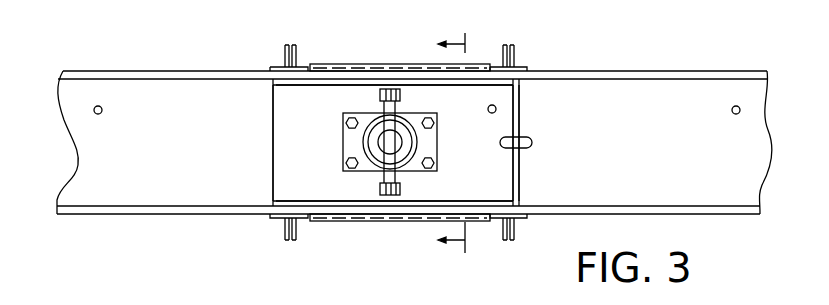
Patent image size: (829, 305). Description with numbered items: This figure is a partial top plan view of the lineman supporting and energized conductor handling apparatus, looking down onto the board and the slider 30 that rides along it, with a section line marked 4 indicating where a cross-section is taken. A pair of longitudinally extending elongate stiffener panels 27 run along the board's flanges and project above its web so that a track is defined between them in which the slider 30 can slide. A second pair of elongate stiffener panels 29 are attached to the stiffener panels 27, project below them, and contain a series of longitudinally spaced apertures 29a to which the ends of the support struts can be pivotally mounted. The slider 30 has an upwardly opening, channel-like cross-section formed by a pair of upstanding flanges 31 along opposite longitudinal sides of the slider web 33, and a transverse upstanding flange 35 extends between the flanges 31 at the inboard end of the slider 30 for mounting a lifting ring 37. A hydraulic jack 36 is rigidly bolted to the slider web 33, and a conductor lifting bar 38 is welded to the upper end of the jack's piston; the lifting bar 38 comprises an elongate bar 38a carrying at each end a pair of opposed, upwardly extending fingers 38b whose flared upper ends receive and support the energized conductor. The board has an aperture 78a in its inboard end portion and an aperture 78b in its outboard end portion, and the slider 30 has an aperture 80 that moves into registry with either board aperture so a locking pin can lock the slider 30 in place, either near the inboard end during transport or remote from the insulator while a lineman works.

The longitudinally extending elongate stiffener panel 27 is at (236, 76).
The second elongate stiffener panel 29 is at (350, 63).
The aperture 29a is at (333, 222).
The slider 30 is at (264, 128).
The upstanding flange 31 is at (490, 84).
The slider web 33 is at (280, 158).
The transverse upstanding flange 35 is at (514, 108).
The hydraulic jack 36 is at (372, 141).
The lifting ring 37 is at (532, 143).
The conductor lifting bar 38 is at (381, 194).
The elongate bar 38a is at (388, 177).
The finger 38b is at (400, 93).
The inboard board aperture 78a is at (738, 106).
The outboard board aperture 78b is at (100, 106).
The slider aperture 80 is at (496, 105).
The section line 4- 4 is at (451, 142).